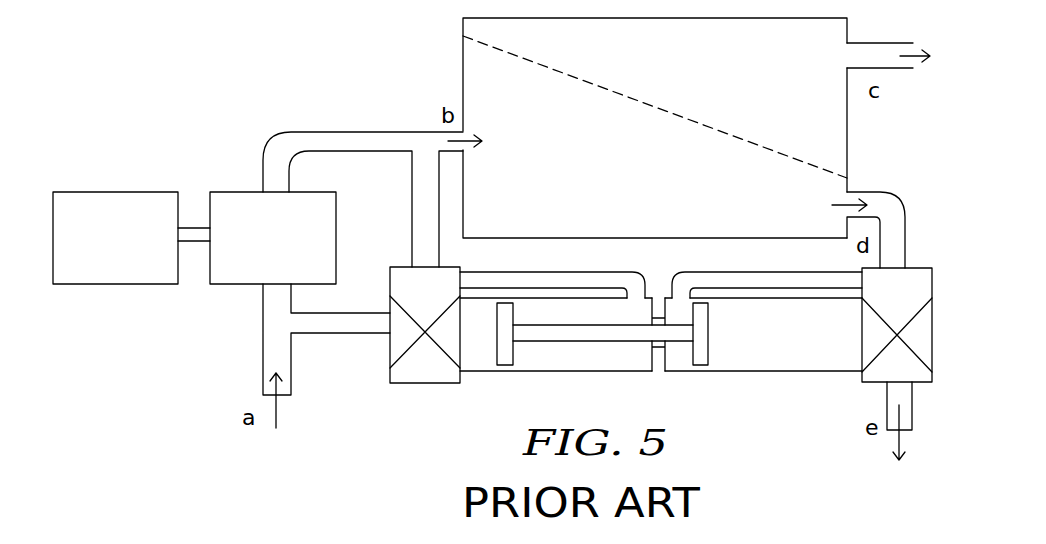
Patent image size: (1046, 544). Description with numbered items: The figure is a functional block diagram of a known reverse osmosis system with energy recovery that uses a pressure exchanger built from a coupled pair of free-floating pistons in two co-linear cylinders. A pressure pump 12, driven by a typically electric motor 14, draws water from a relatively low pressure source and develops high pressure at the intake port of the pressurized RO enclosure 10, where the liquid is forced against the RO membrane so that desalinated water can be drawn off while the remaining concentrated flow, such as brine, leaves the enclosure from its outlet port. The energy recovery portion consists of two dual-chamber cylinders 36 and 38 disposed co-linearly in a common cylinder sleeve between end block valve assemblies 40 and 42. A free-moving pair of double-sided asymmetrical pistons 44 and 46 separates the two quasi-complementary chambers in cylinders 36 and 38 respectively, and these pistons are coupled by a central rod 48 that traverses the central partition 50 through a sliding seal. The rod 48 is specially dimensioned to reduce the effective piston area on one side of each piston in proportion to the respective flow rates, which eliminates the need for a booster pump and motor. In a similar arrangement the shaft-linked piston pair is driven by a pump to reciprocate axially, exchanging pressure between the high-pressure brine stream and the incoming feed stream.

The RO enclosure 10 is at (847, 139).
The pressure pump 12 is at (285, 248).
The motor 14 is at (131, 248).
The dual-chamber cylinder 36 is at (562, 371).
The dual-chamber cylinder 38 is at (788, 371).
The end block valve assembly 40 is at (423, 375).
The end block valve assembly 42 is at (880, 370).
The double-sided asymmetrical piston 44 is at (503, 358).
The double-sided asymmetrical piston 46 is at (702, 348).
The central rod 48 is at (567, 335).
The partition wall 50 is at (656, 361).